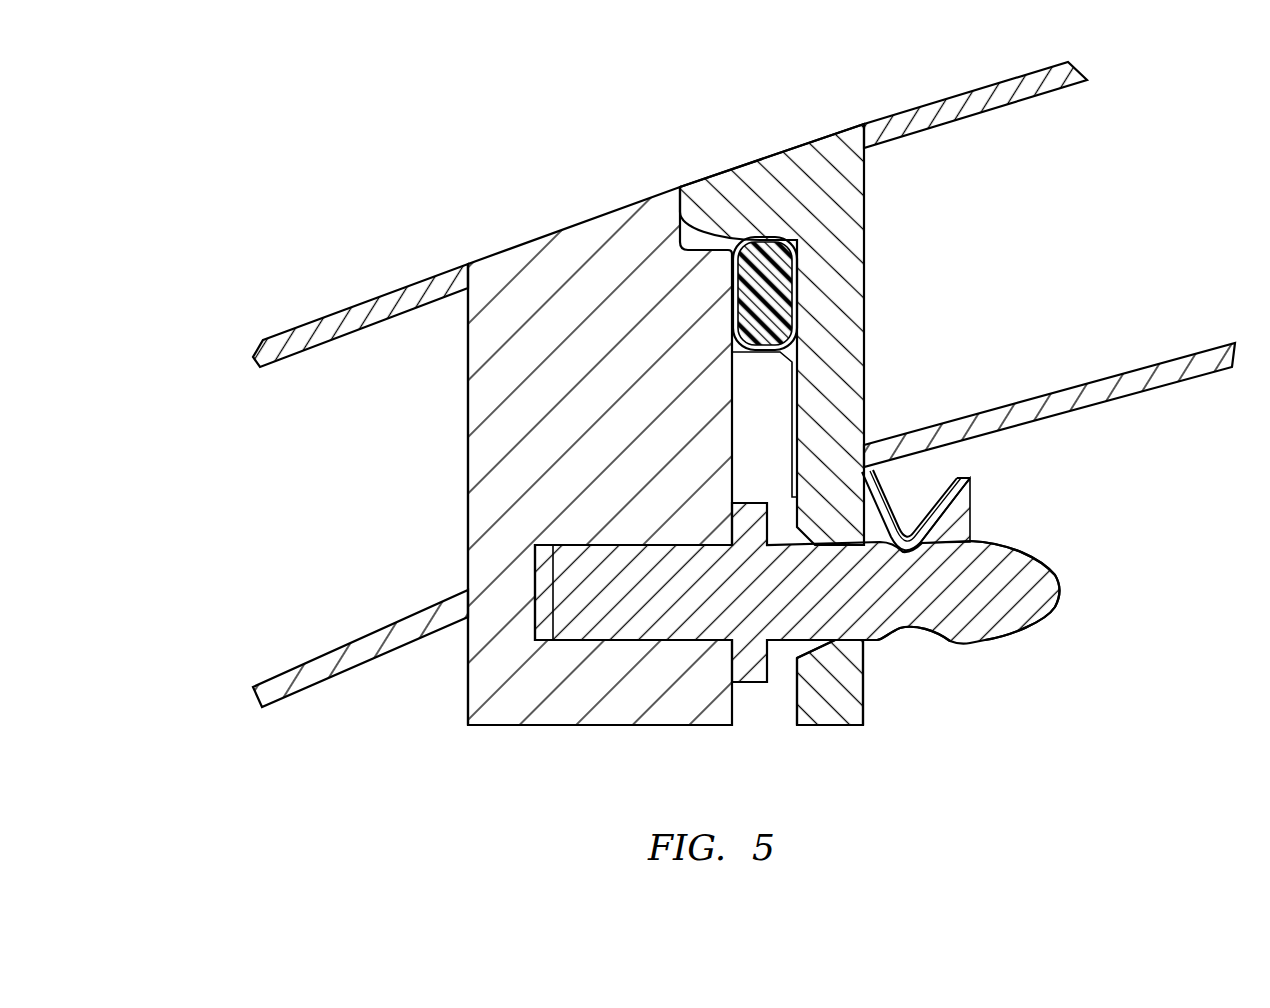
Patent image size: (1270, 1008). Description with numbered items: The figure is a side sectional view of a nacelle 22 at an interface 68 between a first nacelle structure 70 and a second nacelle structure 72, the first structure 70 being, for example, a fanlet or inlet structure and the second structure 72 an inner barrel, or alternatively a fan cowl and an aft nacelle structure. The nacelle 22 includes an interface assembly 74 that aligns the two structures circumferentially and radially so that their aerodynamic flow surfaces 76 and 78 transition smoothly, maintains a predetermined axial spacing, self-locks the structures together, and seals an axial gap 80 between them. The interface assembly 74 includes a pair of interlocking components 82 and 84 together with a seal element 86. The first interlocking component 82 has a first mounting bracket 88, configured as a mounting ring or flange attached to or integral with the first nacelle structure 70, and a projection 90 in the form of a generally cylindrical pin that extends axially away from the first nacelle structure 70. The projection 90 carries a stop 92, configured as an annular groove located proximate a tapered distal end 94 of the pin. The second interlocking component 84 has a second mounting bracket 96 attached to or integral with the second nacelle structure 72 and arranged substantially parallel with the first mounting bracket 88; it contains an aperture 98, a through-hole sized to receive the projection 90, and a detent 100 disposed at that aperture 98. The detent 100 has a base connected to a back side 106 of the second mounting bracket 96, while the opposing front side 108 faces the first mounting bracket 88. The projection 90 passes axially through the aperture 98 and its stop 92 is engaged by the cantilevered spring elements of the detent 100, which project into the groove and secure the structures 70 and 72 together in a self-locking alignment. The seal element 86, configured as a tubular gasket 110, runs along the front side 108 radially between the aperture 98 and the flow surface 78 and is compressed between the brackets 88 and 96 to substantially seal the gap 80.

The nacelle 22 is at (325, 183).
The interface 68 is at (677, 168).
The first nacelle structure 70 is at (262, 522).
The second nacelle structure 72 is at (1127, 157).
The interface assembly 74 is at (725, 738).
The aerodynamic flow surface 76 is at (422, 280).
The aerodynamic flow surface 78 is at (907, 113).
The gap 80 is at (780, 411).
The first interlocking component 82 is at (537, 737).
The second interlocking component 84 is at (878, 693).
The seal element 86 is at (767, 240).
The first mounting bracket 88 is at (468, 688).
The projection 90 is at (1010, 637).
The stop 92 is at (903, 640).
The tapered distal end 94 is at (1025, 557).
The second mounting bracket 96 is at (833, 737).
The aperture 98 is at (828, 648).
The detent 100 is at (978, 493).
The back side 106 is at (868, 678).
The front side 108 is at (797, 713).
The tubular gasket 110 is at (735, 292).